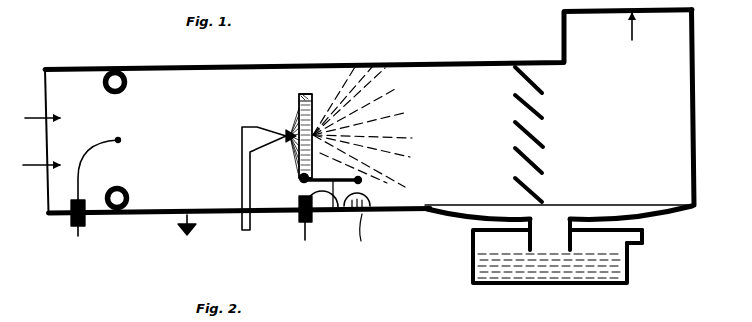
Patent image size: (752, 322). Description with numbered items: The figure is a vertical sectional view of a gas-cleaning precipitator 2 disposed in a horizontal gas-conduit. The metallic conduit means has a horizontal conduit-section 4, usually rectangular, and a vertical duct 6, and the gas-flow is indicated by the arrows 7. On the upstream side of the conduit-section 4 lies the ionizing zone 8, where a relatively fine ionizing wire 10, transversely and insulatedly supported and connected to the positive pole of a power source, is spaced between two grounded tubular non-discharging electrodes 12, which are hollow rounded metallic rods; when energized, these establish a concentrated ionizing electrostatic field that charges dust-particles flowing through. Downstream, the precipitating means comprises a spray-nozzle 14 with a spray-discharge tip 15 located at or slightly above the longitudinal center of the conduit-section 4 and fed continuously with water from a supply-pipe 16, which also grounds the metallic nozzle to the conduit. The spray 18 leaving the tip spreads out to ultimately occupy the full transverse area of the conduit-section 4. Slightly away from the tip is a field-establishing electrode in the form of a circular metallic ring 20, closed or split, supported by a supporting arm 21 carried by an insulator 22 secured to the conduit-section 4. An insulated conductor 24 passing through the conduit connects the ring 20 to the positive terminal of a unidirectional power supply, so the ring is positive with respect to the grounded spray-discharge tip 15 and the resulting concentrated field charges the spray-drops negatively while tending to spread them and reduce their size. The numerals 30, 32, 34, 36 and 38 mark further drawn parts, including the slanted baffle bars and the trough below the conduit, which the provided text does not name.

The gas-cleaning precipitator 2 is at (180, 123).
The horizontal conduit-section 4 is at (396, 65).
The vertical duct 6 is at (696, 31).
The arrows 7 is at (328, 92).
The ionizing zone 8 is at (133, 118).
The ionizing wire 10 is at (120, 140).
The grounded tubular non-discharging electrodes 12 is at (126, 82).
The spray-nozzle 14 is at (268, 133).
The spray-discharge tip 15 is at (281, 146).
The supply-pipe 16 is at (250, 225).
The spray 18 is at (341, 108).
The circular metallic ring 20 is at (300, 95).
The supporting arm 21 is at (344, 215).
The insulator 22 is at (372, 196).
The insulated conductor 24 is at (302, 224).
The baffles 30 is at (543, 146).
The bottom wall 32 is at (465, 219).
The collected liquid 34 is at (525, 283).
The collecting trough 36 is at (618, 283).
The outlet 38 is at (645, 245).